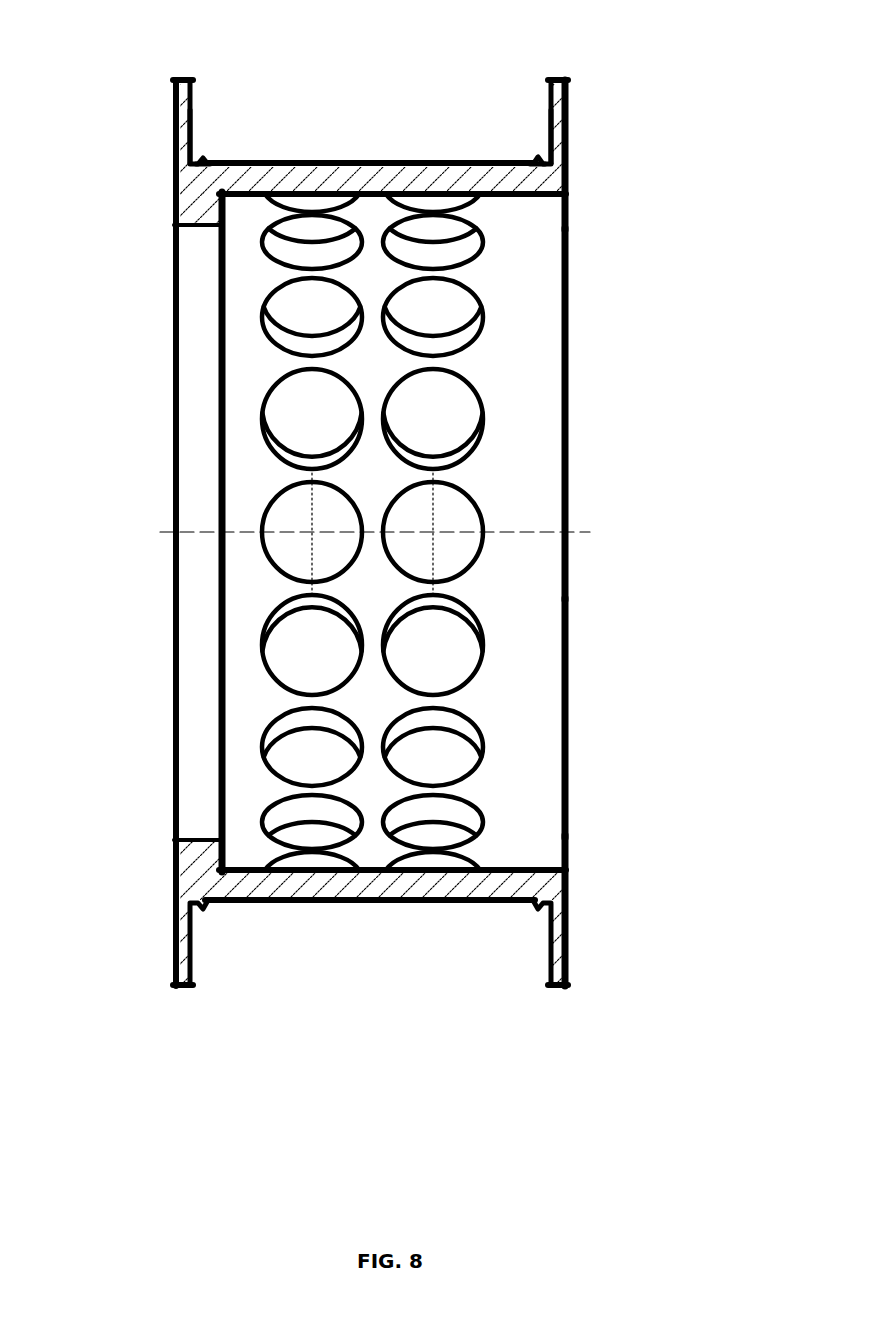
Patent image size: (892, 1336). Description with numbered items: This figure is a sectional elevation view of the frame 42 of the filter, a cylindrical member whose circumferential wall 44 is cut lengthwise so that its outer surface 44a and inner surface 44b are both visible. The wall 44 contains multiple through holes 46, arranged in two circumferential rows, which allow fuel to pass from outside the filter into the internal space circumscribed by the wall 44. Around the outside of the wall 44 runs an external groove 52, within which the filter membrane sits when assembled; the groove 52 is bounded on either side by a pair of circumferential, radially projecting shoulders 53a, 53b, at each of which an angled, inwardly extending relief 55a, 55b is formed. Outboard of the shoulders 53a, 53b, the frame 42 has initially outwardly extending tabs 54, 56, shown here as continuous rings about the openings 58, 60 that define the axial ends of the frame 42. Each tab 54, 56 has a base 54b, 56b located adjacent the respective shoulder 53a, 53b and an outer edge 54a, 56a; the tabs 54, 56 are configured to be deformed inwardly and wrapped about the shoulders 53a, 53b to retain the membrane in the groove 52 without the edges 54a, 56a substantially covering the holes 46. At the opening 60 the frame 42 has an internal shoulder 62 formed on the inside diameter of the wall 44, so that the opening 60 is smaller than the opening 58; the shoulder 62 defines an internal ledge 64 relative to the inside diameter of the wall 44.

The frame 42 is at (570, 708).
The circumferential wall 44 is at (543, 870).
The outer surface 44a is at (323, 899).
The inner surface 44b is at (520, 867).
The through holes 46 is at (477, 393).
The external groove 52 is at (373, 161).
The shoulder 53a is at (533, 160).
The shoulder 53b is at (207, 158).
The tab 54 is at (568, 122).
The outer edge 54a is at (560, 78).
The base 54b is at (568, 157).
The relief 55a is at (540, 145).
The relief 55b is at (197, 148).
The tab 56 is at (173, 117).
The outer edge 56a is at (178, 79).
The base 56b is at (173, 153).
The opening 58 is at (570, 421).
The opening 60 is at (173, 748).
The internal shoulder 62 is at (194, 224).
The internal ledge 64 is at (213, 228).